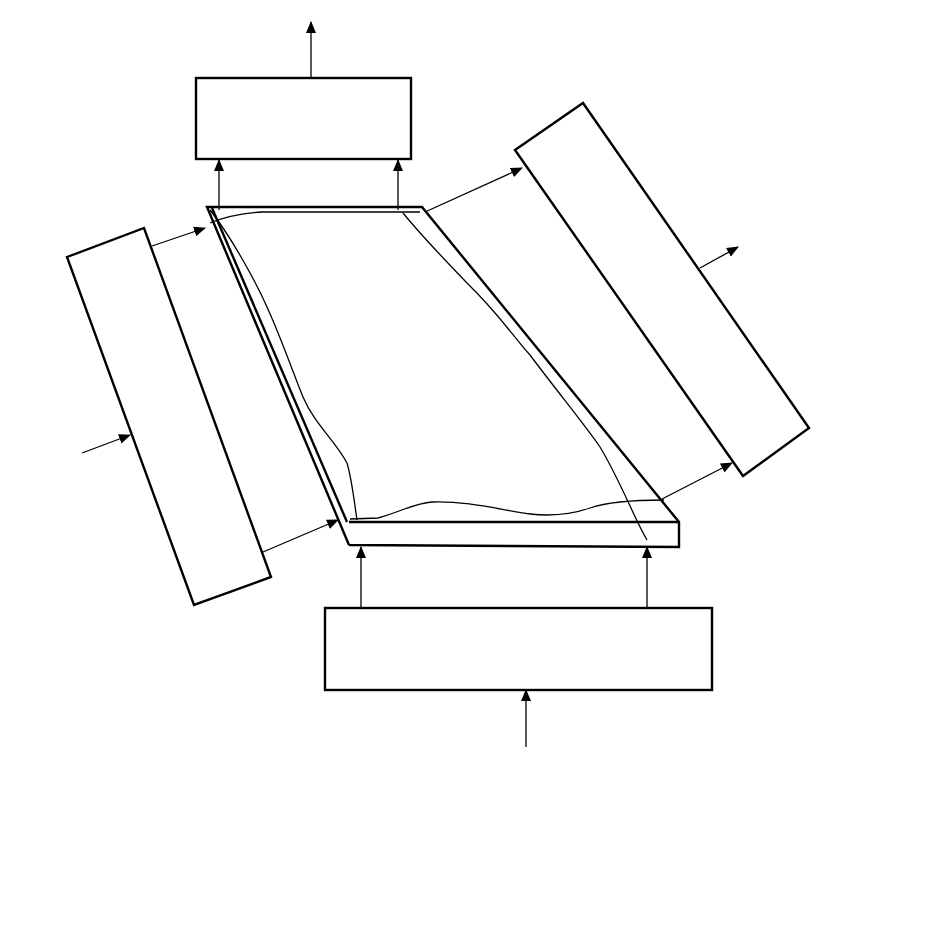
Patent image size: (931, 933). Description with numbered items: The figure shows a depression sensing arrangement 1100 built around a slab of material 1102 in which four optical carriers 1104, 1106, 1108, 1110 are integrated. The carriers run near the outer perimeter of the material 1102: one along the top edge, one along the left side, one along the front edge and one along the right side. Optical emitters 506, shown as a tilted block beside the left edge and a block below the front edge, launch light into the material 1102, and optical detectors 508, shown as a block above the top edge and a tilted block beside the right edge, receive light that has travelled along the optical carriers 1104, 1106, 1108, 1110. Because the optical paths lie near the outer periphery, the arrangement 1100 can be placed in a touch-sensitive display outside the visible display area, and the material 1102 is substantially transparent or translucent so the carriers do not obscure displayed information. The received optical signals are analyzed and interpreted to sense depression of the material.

The depression sensing arrangement 1100 is at (106, 52).
The optical emitters 506 is at (107, 240).
The optical detectors 508 is at (411, 78).
The material 1102 is at (207, 207).
The optical carrier 1104 is at (267, 219).
The optical carrier 1106 is at (327, 430).
The optical carrier 1108 is at (453, 503).
The optical carrier 1110 is at (478, 280).